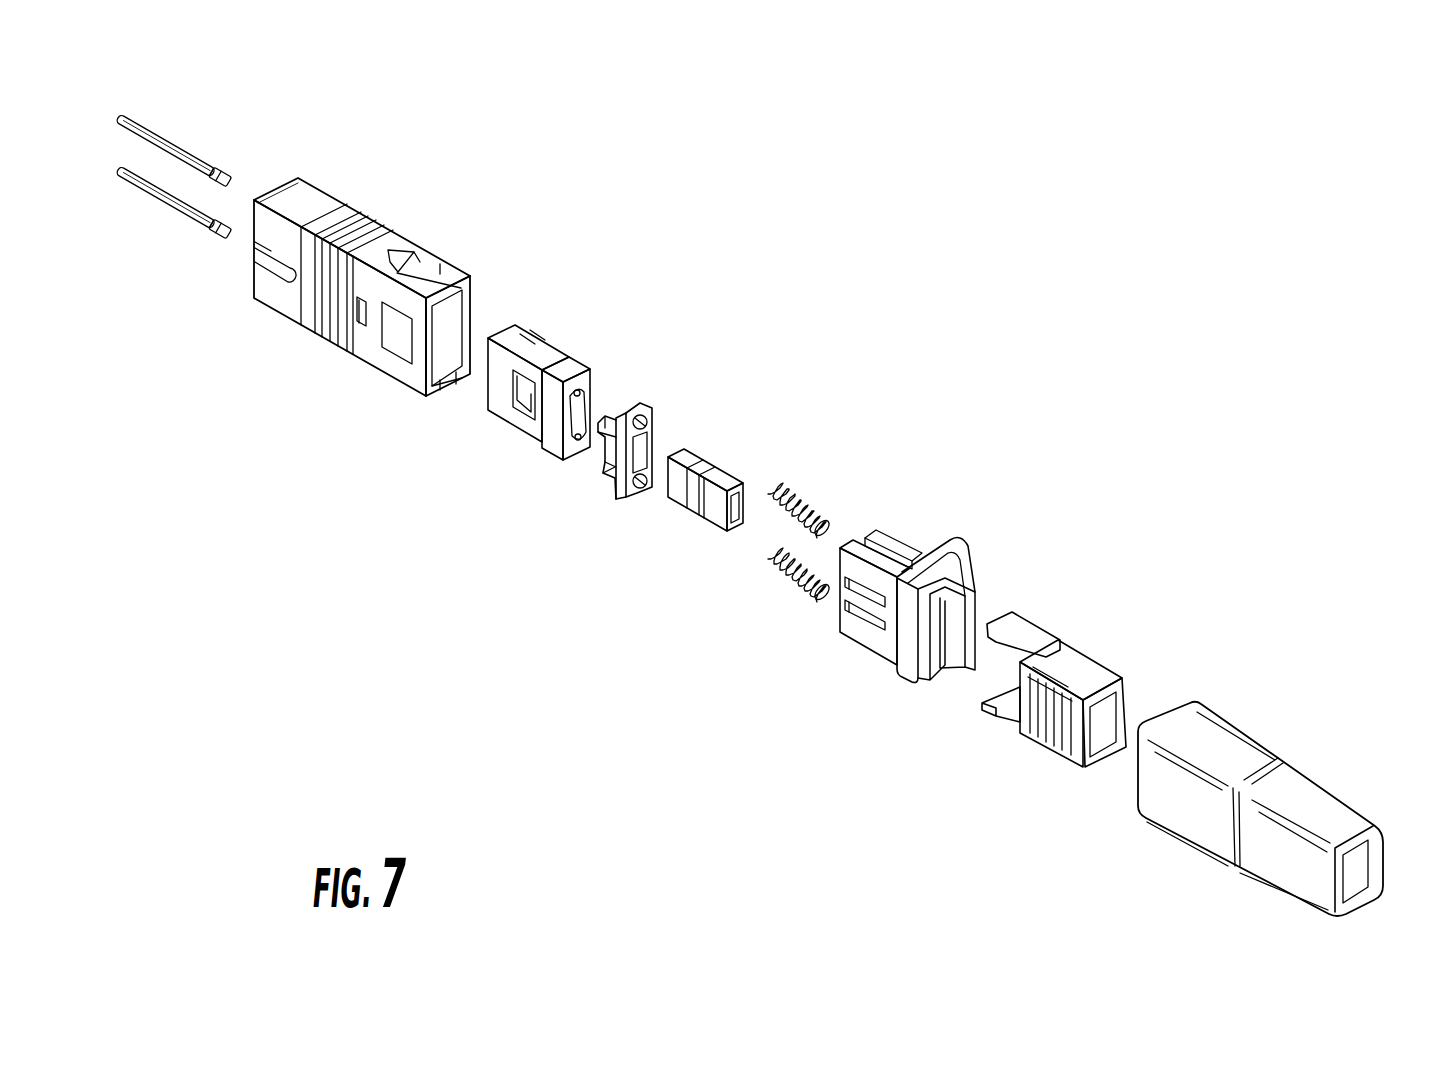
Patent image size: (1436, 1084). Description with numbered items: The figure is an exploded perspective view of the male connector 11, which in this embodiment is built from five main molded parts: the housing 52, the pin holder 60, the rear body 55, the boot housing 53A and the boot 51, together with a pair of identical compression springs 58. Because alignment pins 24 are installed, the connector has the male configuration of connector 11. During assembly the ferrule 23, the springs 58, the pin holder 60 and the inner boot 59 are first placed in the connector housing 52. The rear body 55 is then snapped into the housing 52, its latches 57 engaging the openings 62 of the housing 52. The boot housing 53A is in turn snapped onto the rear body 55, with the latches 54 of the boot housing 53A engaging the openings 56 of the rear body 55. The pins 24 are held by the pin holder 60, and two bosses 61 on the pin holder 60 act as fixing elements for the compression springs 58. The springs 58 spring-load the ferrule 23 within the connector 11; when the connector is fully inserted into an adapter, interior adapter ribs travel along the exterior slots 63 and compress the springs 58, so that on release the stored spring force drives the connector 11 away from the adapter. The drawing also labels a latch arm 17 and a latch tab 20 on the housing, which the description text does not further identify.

The male connector 11 is at (569, 598).
The latch arm 17 is at (963, 547).
The latch tab 20 is at (400, 253).
The ferrule 23 is at (575, 378).
The alignment pins 24 is at (160, 134).
The boot 51 is at (1285, 770).
The housing 52 is at (340, 321).
The boot housing 53A is at (1072, 668).
The latches 54 is at (1018, 624).
The rear body 55 is at (888, 535).
The openings 56 is at (969, 608).
The latches 57 is at (895, 555).
The compression springs 58 is at (808, 490).
The inner boot 59 is at (706, 452).
The pin holder 60 is at (673, 428).
The bosses 61 is at (650, 492).
The openings 62 is at (364, 318).
The slots 63 is at (278, 258).